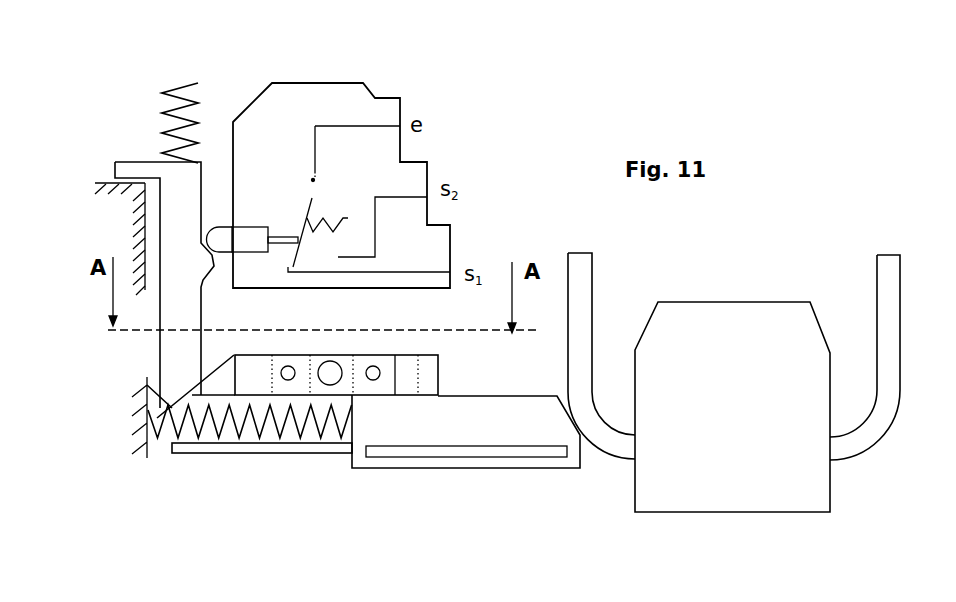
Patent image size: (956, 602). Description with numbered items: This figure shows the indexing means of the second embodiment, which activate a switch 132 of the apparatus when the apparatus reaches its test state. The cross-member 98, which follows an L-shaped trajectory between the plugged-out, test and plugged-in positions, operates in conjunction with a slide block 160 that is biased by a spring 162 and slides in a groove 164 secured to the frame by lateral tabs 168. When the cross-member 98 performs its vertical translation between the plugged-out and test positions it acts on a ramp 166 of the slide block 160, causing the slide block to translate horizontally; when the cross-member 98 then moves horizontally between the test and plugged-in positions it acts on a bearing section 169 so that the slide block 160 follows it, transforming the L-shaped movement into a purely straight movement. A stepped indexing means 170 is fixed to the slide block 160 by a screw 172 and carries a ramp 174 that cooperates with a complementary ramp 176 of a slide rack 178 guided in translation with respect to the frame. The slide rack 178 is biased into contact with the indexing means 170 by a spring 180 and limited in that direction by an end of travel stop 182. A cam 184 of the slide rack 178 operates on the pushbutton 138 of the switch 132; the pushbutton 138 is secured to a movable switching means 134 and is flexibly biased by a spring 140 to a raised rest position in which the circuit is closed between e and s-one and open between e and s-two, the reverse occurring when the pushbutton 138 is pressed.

The cross-member 98 is at (732, 431).
The switch 132 is at (412, 160).
The movable switching means 134 is at (391, 199).
The pushbutton 138 is at (308, 135).
The spring 140 is at (418, 235).
The slide block 160 is at (466, 407).
The spring 162 is at (137, 476).
The groove 164 is at (280, 470).
The ramp 166 is at (637, 356).
The lateral tabs 168 is at (458, 498).
The bearing section 169 is at (515, 491).
The stepped indexing means 170 is at (336, 348).
The screw 172 is at (364, 343).
The ramp 174 is at (250, 431).
The complementary ramp 176 is at (148, 406).
The slide rack 178 is at (287, 330).
The spring 180 is at (135, 106).
The end of travel stop 182 is at (100, 239).
The cam 184 is at (194, 285).